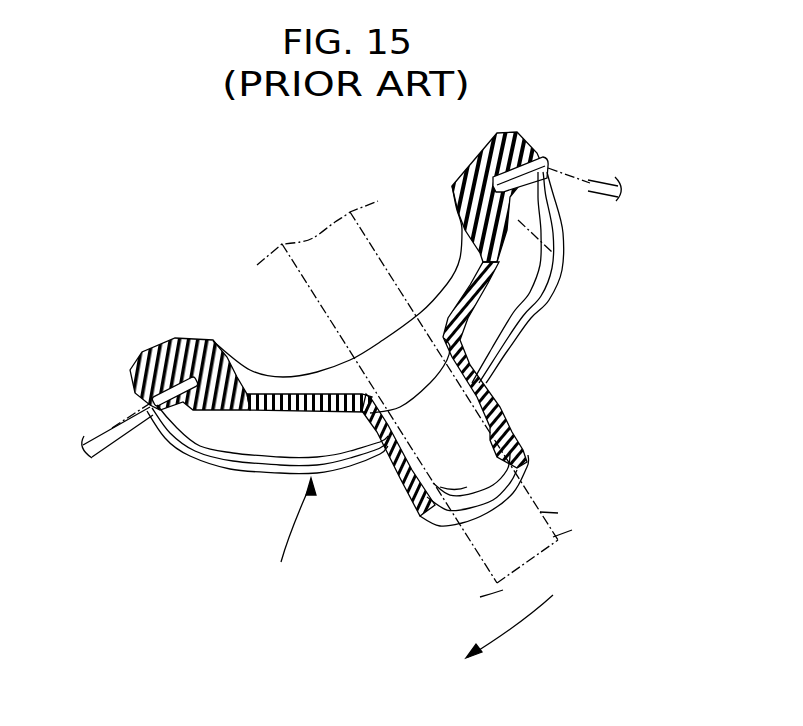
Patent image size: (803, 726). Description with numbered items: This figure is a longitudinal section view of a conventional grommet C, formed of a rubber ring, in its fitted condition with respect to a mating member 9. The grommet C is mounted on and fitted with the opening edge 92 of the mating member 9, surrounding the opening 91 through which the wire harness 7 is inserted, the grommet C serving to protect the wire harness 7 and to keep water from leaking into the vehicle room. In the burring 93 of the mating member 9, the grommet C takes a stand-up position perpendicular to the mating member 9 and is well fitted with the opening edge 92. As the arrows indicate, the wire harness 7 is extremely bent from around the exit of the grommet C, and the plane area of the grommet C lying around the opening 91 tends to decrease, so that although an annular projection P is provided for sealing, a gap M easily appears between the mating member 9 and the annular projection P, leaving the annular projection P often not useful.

The opening 91 is at (248, 323).
The opening edge 92 is at (458, 168).
The burring 93 is at (561, 258).
The mating member 9 is at (597, 199).
The wire harness 7 is at (545, 513).
The annular projection P is at (135, 390).
The gap M is at (537, 160).
The grommet C is at (293, 536).